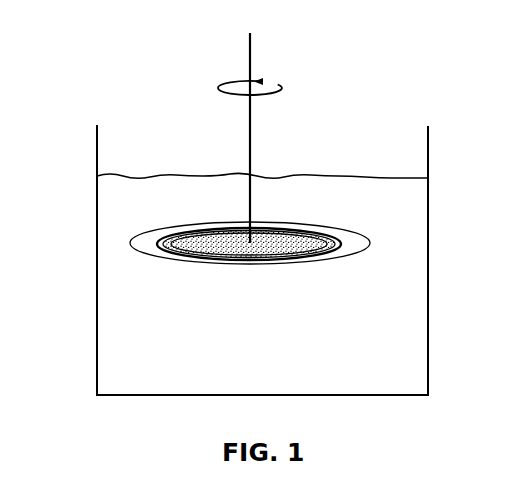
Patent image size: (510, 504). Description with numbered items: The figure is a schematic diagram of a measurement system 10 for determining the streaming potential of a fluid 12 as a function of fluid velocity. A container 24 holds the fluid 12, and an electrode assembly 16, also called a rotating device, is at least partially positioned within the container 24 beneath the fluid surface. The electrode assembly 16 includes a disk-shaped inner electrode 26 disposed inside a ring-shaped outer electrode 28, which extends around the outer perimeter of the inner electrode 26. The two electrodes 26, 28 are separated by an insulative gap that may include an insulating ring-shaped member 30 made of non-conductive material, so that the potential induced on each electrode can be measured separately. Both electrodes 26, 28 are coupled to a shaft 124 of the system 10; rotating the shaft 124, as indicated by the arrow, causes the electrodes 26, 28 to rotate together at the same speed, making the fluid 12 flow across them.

The measurement system 10 is at (124, 36).
The fluid 12 is at (108, 335).
The container 24 is at (97, 224).
The shaft 124 is at (250, 134).
The disk-shaped electrode 26 is at (282, 238).
The ring-shaped electrode 28 is at (350, 237).
The insulating ring-shaped member 30 is at (338, 251).
The electrode assembly 16 is at (248, 281).